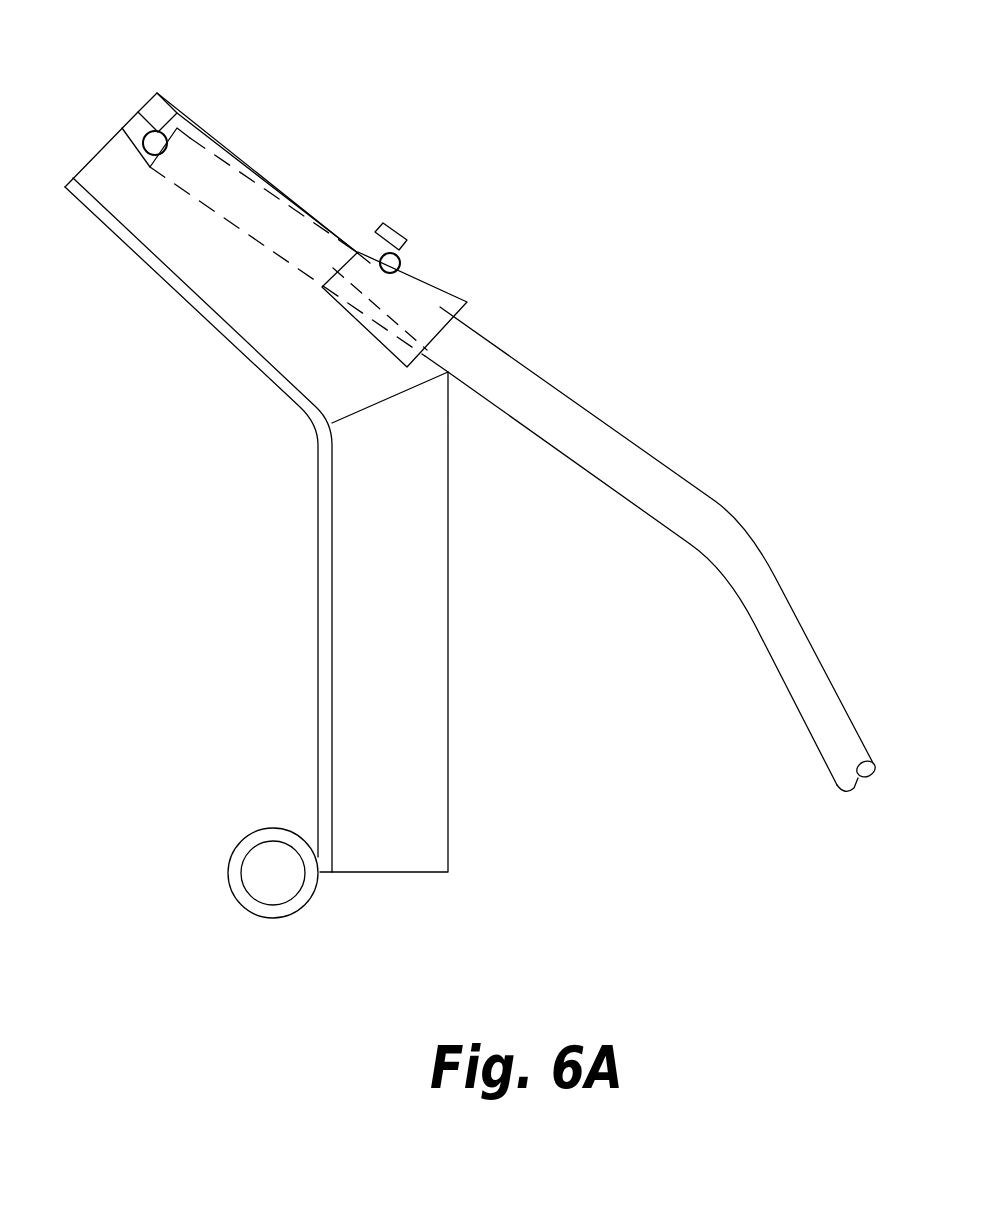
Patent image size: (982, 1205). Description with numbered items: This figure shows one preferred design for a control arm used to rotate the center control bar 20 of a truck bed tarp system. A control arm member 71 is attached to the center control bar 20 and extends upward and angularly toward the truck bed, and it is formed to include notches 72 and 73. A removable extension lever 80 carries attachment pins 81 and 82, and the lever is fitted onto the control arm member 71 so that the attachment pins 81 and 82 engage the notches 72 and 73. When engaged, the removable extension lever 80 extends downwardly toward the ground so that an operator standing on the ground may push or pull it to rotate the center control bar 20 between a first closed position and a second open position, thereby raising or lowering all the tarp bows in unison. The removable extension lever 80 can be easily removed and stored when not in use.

The center control bar 20 is at (247, 832).
The control arm member 71 is at (420, 613).
The notch 72 is at (133, 125).
The notch 73 is at (372, 250).
The removable extension lever 80 is at (795, 630).
The attachment pin 81 is at (156, 134).
The attachment pin 82 is at (391, 256).